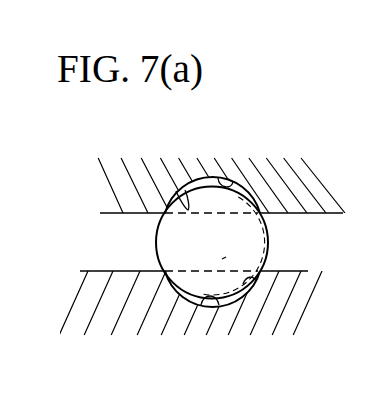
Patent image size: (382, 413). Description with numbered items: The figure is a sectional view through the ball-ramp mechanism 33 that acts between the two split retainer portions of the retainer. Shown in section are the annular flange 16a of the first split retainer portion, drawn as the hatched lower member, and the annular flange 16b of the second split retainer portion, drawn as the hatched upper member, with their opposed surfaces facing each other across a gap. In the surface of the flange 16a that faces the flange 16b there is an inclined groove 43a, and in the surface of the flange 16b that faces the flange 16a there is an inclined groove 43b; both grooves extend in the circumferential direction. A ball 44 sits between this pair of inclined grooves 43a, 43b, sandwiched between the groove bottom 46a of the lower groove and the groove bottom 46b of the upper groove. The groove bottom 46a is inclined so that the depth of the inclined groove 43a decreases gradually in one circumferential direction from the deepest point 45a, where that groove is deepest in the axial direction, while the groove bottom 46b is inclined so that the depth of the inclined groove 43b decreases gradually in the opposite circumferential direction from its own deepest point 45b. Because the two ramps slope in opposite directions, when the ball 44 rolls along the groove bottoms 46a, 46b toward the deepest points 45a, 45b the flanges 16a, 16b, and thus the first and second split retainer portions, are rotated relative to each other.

The annular flange 16a is at (103, 304).
The annular flange 16b is at (112, 190).
The ball-ramp mechanism 33 is at (148, 242).
The ball 44 is at (270, 245).
The inclined groove 43a is at (155, 283).
The inclined groove 43b is at (262, 204).
The deepest point 45a is at (214, 300).
The deepest point 45b is at (221, 177).
The groove bottom 46a is at (250, 286).
The groove bottom 46b is at (190, 188).